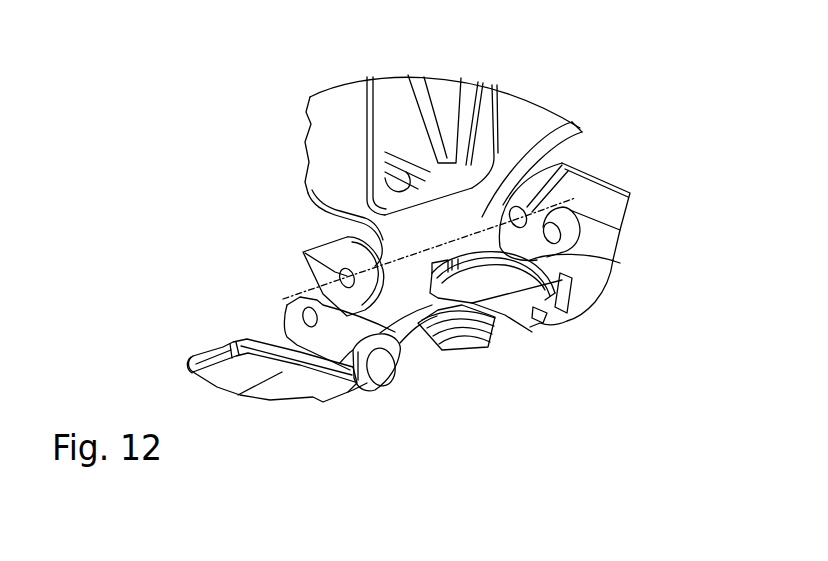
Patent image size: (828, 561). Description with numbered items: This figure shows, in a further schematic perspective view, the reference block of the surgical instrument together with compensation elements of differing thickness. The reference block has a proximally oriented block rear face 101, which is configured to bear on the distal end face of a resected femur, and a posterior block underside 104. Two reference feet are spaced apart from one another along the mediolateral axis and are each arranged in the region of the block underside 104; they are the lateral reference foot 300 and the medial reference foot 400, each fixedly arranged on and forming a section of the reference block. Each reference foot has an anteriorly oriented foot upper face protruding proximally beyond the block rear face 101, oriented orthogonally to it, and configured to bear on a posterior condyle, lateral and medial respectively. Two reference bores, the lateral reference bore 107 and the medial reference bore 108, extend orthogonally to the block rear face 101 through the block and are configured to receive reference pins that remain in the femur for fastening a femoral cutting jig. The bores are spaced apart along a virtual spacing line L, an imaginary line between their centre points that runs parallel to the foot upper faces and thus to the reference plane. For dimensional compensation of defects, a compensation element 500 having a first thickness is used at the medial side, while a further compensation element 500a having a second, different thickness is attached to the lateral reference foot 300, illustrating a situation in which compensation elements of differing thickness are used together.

The block rear face 101 is at (310, 166).
The lateral reference bore 107 is at (336, 272).
The medial reference bore 108 is at (578, 195).
The virtual spacing line L is at (285, 300).
The block underside 104 is at (385, 343).
The lateral reference foot 300 is at (270, 372).
The medial reference foot 400 is at (502, 293).
The compensation element 500 is at (620, 263).
The compensation element 500a is at (189, 363).